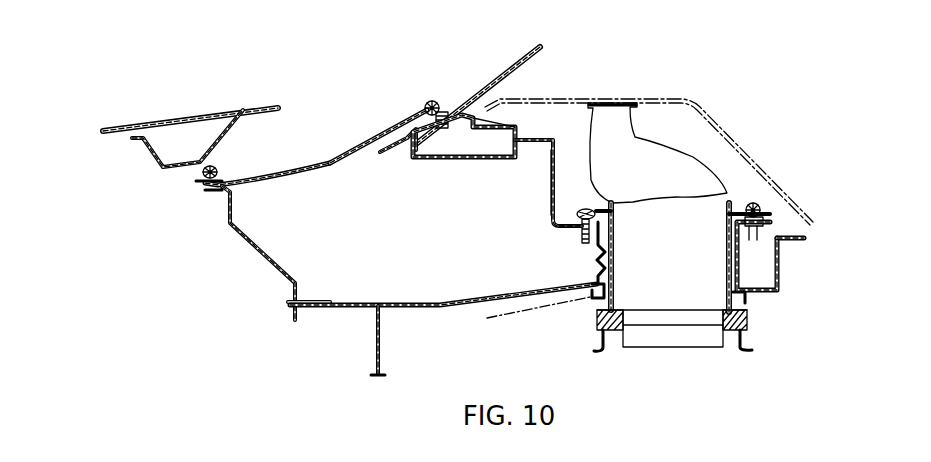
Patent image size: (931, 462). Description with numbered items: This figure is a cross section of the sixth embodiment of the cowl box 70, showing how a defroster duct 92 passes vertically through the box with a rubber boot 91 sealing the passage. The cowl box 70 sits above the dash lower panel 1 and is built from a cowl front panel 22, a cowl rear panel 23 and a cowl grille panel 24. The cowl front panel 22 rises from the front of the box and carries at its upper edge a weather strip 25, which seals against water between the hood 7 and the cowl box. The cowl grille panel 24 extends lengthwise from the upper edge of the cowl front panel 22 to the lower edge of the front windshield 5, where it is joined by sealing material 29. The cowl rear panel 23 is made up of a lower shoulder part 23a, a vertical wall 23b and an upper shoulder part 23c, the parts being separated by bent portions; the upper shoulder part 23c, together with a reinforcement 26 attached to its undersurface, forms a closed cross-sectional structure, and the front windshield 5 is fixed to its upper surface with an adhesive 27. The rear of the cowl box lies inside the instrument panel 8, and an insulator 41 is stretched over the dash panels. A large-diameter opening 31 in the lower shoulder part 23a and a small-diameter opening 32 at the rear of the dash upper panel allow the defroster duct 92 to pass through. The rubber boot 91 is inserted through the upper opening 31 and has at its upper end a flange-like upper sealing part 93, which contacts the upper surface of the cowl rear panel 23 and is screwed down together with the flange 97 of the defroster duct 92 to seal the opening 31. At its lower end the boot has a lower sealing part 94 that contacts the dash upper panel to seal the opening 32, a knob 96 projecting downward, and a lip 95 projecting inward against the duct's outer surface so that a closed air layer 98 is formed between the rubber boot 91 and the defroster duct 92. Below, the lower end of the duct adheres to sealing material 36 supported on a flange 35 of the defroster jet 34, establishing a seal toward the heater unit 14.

The dash lower panel 1 is at (377, 345).
The front windshield 5 is at (497, 76).
The hood 7 is at (238, 107).
The instrument panel 8 is at (684, 103).
The heater unit 14 is at (748, 340).
The cowl front panel 22 is at (255, 250).
The cowl rear panel 23 is at (560, 229).
The lower shoulder part 23a is at (553, 223).
The vertical wall 23b is at (553, 163).
The upper shoulder part 23c is at (512, 123).
The cowl grille panel 24 is at (365, 138).
The weather strip 25 is at (205, 178).
The reinforcement 26 is at (455, 158).
The adhesive 27 is at (410, 150).
The sealing material 29 is at (435, 100).
The opening 31 is at (594, 228).
The opening 32 is at (598, 295).
The defroster jet 34 is at (658, 337).
The flange 35 is at (748, 322).
The sealing material 36 is at (713, 315).
The insulator 41 is at (502, 318).
The cowl box 70 is at (332, 190).
The rubber boot 91 is at (745, 265).
The defroster duct 92 is at (695, 160).
The upper sealing part 93 is at (778, 218).
The lower sealing part 94 is at (775, 270).
The lip 95 is at (728, 258).
The knob 96 is at (740, 300).
The flange 97 is at (745, 208).
The closed air layer 98 is at (598, 258).